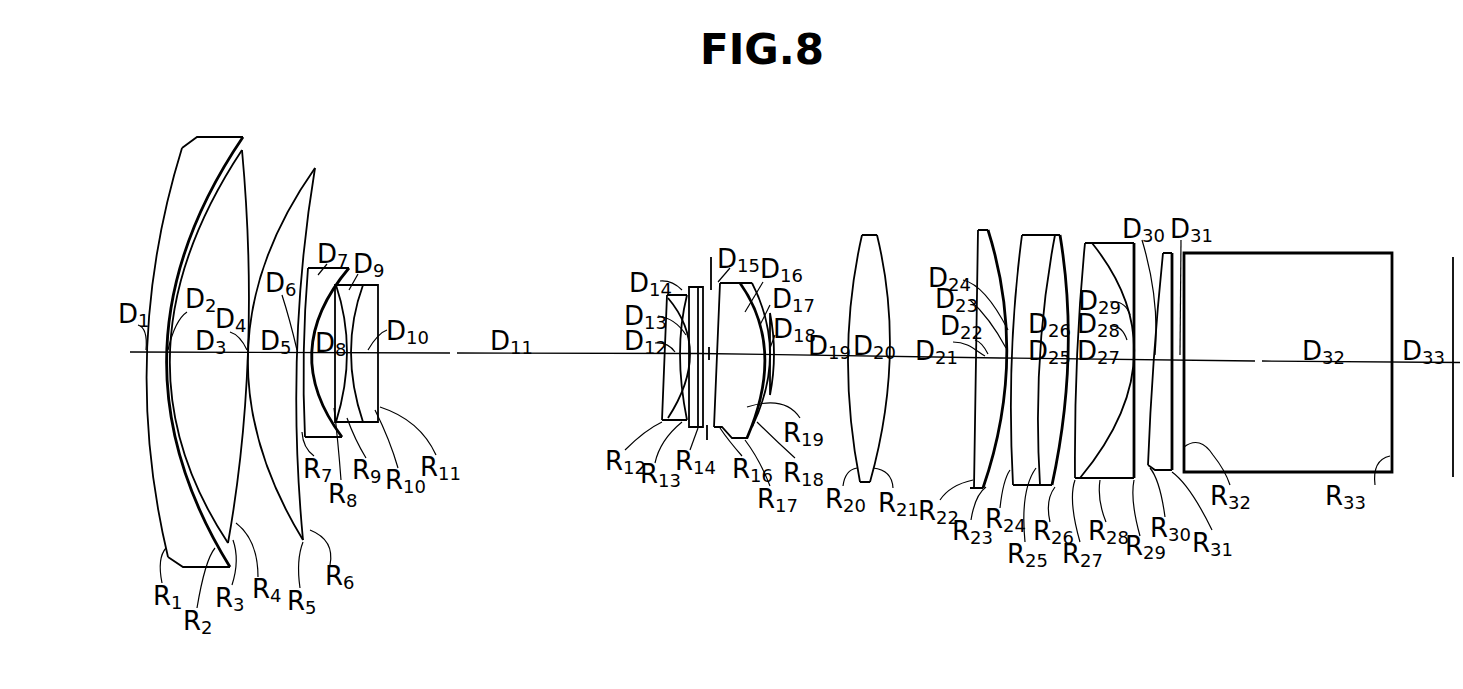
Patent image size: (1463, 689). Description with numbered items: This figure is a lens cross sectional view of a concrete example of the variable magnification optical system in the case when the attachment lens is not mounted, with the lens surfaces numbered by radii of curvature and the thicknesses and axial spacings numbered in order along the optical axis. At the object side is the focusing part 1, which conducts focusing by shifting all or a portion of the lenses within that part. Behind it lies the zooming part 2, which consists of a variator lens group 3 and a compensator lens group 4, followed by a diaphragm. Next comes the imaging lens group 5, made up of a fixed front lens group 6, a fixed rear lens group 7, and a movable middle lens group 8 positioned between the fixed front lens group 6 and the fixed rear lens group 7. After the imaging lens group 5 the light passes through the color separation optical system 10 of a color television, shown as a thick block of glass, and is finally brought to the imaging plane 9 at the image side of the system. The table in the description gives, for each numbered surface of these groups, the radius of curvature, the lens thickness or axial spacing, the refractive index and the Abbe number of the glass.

The focusing part 1 is at (333, 121).
The zooming part 2 is at (693, 168).
The variator lens group 3 is at (398, 236).
The compensator lens group 4 is at (707, 231).
The imaging lens group 5 is at (1083, 148).
The fixed front lens group 6 is at (783, 231).
The fixed rear lens group 7 is at (1187, 202).
The movable middle lens group 8 is at (900, 224).
The imaging plane 9 is at (1453, 272).
The color separation optical system 10 is at (1283, 253).